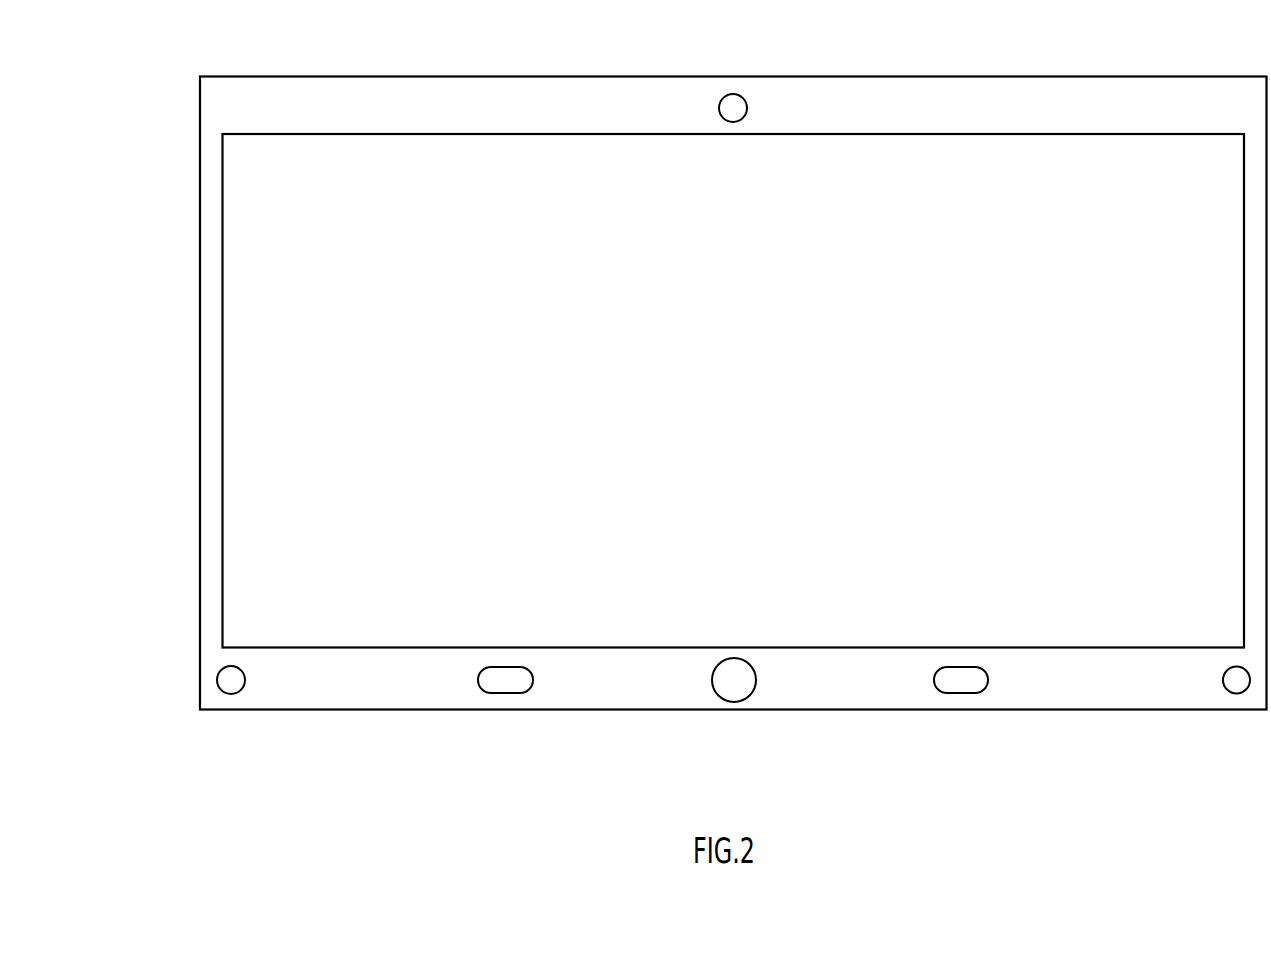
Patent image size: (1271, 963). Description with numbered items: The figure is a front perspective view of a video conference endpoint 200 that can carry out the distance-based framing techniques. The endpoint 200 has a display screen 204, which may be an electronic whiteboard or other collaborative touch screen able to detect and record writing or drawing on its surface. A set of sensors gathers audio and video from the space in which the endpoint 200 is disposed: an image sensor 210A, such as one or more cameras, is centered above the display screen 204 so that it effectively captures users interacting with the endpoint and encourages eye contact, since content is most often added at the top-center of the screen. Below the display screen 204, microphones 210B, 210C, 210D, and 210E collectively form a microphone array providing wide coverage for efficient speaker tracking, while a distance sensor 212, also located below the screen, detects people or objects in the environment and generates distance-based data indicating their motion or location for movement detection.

The video conference endpoint 200 is at (148, 125).
The display screen 204 is at (495, 170).
The image sensor 210A is at (718, 101).
The microphone 210B is at (240, 690).
The microphone 210C is at (507, 693).
The microphone 210D is at (963, 693).
The microphone 210E is at (1228, 690).
The distance sensor 212 is at (740, 701).